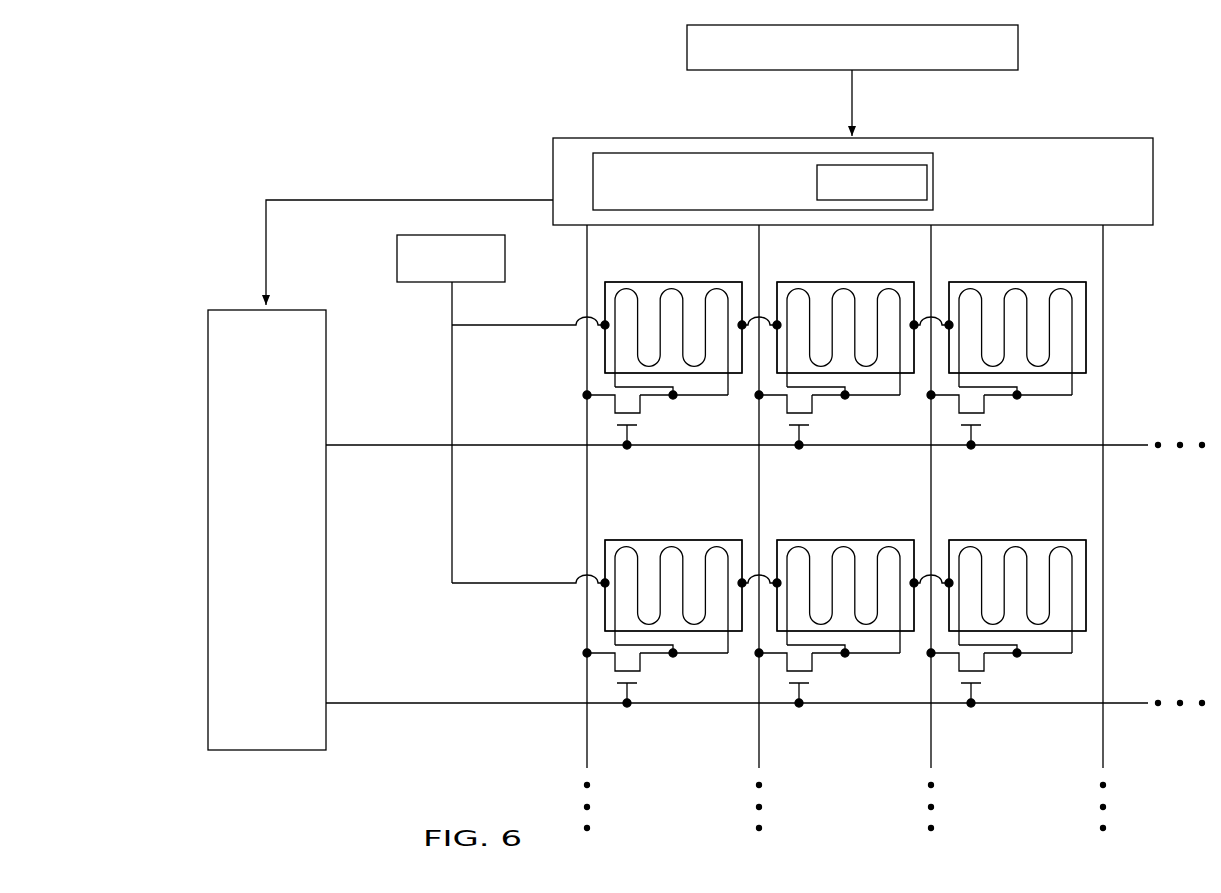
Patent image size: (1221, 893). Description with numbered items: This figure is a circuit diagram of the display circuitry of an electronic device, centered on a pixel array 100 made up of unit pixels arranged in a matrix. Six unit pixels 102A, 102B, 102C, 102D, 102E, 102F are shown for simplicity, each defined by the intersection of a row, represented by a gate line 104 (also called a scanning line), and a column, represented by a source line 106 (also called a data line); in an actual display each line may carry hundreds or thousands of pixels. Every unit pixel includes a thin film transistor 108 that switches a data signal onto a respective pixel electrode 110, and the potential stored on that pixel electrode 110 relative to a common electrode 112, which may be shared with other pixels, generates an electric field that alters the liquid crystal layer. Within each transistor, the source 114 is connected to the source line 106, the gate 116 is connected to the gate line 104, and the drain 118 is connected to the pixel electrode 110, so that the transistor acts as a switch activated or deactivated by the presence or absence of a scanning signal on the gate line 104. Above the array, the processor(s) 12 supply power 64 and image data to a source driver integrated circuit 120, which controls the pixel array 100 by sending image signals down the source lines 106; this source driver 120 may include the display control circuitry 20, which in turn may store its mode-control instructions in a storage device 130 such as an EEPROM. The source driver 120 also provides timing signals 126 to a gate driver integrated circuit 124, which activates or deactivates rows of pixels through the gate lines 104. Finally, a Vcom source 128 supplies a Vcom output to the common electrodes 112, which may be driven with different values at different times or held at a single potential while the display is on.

The processor(s) 12 is at (990, 25).
The display control circuitry 20 is at (630, 153).
The power 64 is at (853, 105).
The pixel array 100 is at (503, 95).
The unit pixel 102A is at (607, 255).
The unit pixel 102B is at (779, 255).
The unit pixel 102C is at (951, 255).
The unit pixel 102D is at (607, 513).
The unit pixel 102E is at (779, 513).
The unit pixel 102F is at (951, 513).
The gate line 104 is at (1126, 445).
The source line 106 is at (587, 768).
The thin film transistor 108 is at (647, 421).
The pixel electrode 110 is at (671, 282).
The common electrode 112 is at (693, 282).
The source 114 is at (585, 397).
The gate 116 is at (628, 450).
The drain 118 is at (676, 399).
The source driver integrated circuit 120 is at (990, 138).
The gate driver integrated circuit 124 is at (305, 310).
The timing signals 126 is at (305, 200).
The Vcom source 128 is at (432, 235).
The storage device 130 is at (876, 165).